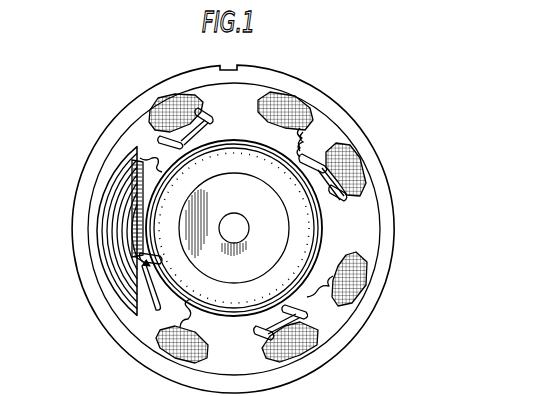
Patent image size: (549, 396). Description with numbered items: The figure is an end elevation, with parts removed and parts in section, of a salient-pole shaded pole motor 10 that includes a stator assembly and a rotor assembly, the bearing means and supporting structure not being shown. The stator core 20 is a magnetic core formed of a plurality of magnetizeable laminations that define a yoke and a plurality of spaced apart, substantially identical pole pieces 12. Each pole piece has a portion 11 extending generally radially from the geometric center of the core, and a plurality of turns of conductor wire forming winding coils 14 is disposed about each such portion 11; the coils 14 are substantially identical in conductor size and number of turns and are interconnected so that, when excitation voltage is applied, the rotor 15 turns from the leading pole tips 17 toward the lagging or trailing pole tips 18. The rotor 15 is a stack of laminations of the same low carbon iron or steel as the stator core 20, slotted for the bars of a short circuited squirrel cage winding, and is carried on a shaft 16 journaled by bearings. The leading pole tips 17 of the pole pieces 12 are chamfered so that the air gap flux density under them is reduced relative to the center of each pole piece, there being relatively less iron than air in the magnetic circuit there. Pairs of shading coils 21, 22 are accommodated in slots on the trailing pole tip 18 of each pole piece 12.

The salient-pole shaded pole motor 10 is at (379, 145).
The portion of pole piece 11 is at (272, 164).
The pole pieces 12 is at (243, 114).
The winding coils 14 is at (295, 108).
The rotor 15 is at (245, 198).
The shaft 16 is at (243, 225).
The leading pole tips 17 is at (303, 132).
The trailing pole tips 18 is at (168, 146).
The stator core 20 is at (398, 212).
The shading coil 21 is at (288, 311).
The shading coil 22 is at (254, 338).